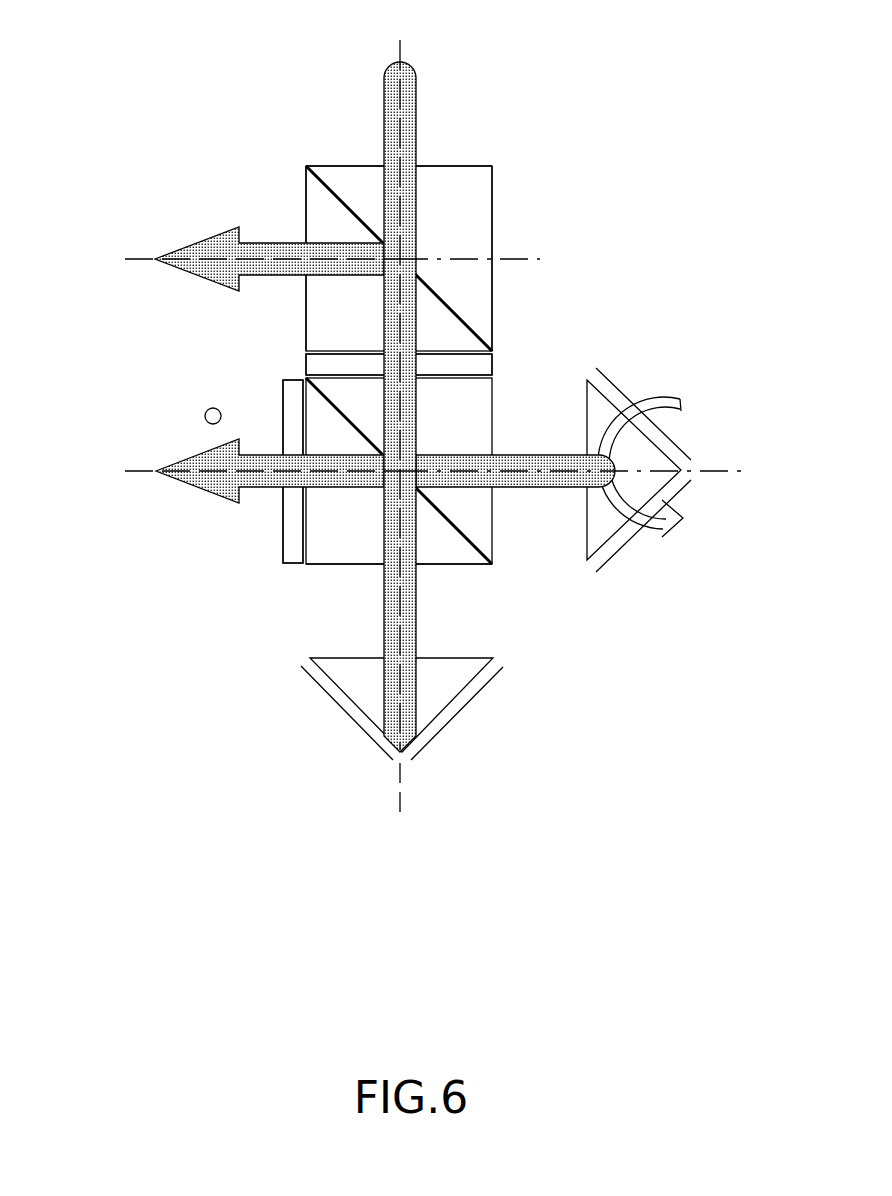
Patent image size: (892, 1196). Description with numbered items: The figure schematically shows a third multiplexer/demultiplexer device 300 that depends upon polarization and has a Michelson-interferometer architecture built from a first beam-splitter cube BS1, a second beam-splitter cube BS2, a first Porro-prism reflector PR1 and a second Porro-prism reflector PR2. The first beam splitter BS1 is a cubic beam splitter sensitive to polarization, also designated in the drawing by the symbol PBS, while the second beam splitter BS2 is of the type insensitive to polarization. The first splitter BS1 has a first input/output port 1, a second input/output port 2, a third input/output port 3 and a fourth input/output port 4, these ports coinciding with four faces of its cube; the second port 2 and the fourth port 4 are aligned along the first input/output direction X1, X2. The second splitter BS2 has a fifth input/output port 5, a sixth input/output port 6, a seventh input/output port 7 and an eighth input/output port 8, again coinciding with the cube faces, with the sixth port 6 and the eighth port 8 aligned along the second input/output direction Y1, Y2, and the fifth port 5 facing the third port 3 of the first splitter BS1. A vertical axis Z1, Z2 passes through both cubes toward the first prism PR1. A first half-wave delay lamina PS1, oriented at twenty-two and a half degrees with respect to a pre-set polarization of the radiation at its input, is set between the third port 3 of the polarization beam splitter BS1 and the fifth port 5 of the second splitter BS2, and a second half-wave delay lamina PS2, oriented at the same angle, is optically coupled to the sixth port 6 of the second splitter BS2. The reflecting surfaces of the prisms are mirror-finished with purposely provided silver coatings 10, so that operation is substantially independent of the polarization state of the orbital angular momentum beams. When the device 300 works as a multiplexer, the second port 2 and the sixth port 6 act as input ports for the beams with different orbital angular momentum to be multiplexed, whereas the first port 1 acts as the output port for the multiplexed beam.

The first input/output port 1 is at (443, 167).
The second input/output port 2 is at (306, 217).
The third input/output port 3 is at (447, 350).
The fourth input/output port 4 is at (493, 197).
The fifth input/output port 5 is at (440, 378).
The sixth input/output port 6 is at (316, 508).
The seventh input/output port 7 is at (448, 565).
The eighth input/output port 8 is at (492, 510).
The silver coatings 10 is at (318, 685).
The third multiplexer/demultiplexer device 300 is at (422, 471).
The first beam-splitter cube BS1 is at (299, 182).
The second beam-splitter cube BS2 is at (314, 577).
The first delay lamina PS1 is at (299, 354).
The second delay lamina PS2 is at (275, 392).
The first Porro-prism reflector PR1 is at (472, 638).
The second Porro-prism reflector PR2 is at (578, 398).
The first input/output direction X1 is at (246, 261).
The first input/output direction X2 is at (482, 261).
The second input/output direction Y1 is at (247, 473).
The second input/output direction Y2 is at (575, 488).
The Z axis Z1 is at (398, 381).
The Z axis Z2 is at (403, 807).